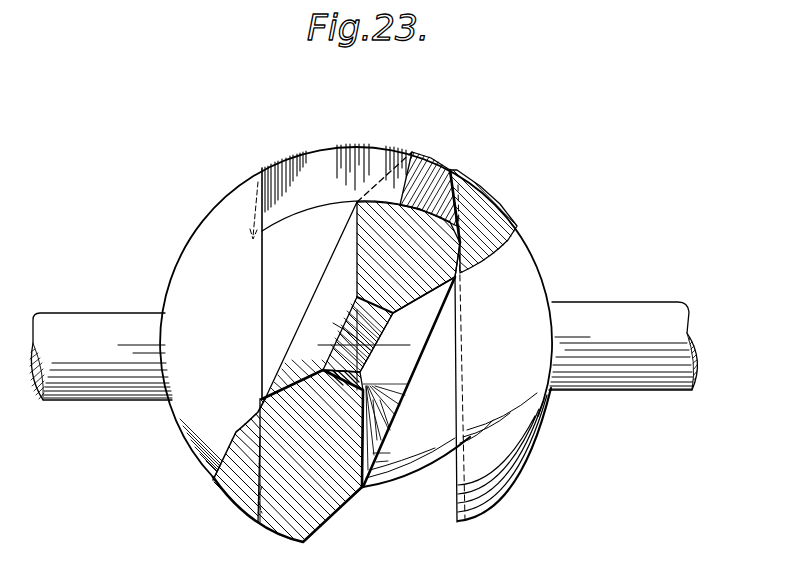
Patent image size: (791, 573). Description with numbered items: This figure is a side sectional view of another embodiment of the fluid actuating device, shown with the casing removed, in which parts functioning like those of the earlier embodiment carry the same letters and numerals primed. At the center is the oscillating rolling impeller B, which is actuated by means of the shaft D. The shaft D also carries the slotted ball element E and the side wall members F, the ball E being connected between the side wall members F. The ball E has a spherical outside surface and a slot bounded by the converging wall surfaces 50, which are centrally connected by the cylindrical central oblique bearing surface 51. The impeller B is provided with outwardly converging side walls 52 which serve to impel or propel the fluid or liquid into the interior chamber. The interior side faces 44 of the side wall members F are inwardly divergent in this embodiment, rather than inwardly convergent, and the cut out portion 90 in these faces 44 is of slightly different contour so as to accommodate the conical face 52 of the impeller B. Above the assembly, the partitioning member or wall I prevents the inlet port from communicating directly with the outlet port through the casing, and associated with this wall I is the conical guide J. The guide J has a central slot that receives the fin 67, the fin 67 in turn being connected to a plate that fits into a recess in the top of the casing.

The fin 67 is at (312, 160).
The partitioning member or wall I is at (357, 157).
The conical guide J is at (430, 167).
The cut out portion 90 is at (476, 194).
The side wall members F is at (212, 222).
The shaft D is at (86, 320).
The slotted ball element E is at (408, 500).
The cylindrical central oblique bearing surface 51 is at (367, 331).
The converging wall surfaces of the slot 50 is at (386, 382).
The outwardly converging side walls 52 is at (342, 507).
The oscillating rolling impeller B is at (290, 520).
The interior side faces 44 is at (257, 520).